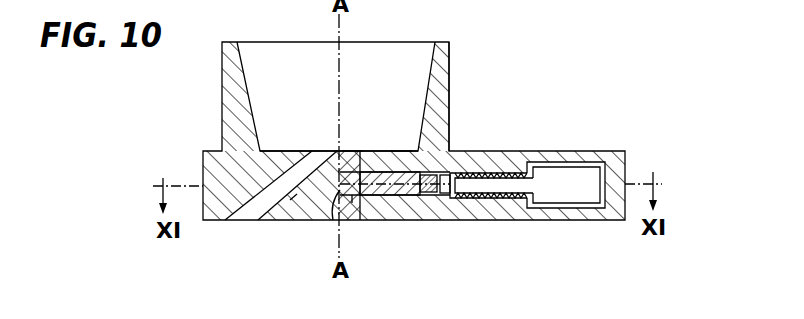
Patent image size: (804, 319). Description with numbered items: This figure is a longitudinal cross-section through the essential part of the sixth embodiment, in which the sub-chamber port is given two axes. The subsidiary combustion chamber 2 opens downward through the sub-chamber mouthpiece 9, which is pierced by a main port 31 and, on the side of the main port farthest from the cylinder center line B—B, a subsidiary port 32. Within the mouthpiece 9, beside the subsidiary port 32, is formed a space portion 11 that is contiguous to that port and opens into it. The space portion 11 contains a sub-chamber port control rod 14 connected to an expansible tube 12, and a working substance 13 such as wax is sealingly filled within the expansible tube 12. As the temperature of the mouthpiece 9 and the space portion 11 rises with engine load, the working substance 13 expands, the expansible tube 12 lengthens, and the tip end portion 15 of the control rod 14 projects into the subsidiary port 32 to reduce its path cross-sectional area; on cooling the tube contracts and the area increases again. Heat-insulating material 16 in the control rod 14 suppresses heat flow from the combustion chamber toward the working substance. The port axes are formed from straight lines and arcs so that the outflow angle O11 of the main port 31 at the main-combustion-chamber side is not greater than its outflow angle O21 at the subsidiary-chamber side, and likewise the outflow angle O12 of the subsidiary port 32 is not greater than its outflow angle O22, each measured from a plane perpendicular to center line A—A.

The subsidiary combustion chamber 2 is at (421, 50).
The sub-chamber mouthpiece 9 is at (451, 62).
The space portion 11 is at (501, 200).
The expansible tube 12 is at (475, 198).
The working substance 13 is at (571, 190).
The sub-chamber port control rod 14 is at (381, 208).
The tip end portion 15 is at (330, 200).
The heat-insulating material 16 is at (421, 208).
The main port 31 is at (251, 212).
The subsidiary port 32 is at (333, 220).
The outflow angle O11 is at (298, 209).
The outflow angle O12 is at (353, 210).
The outflow angle O21 is at (347, 143).
The outflow angle O22 is at (410, 151).